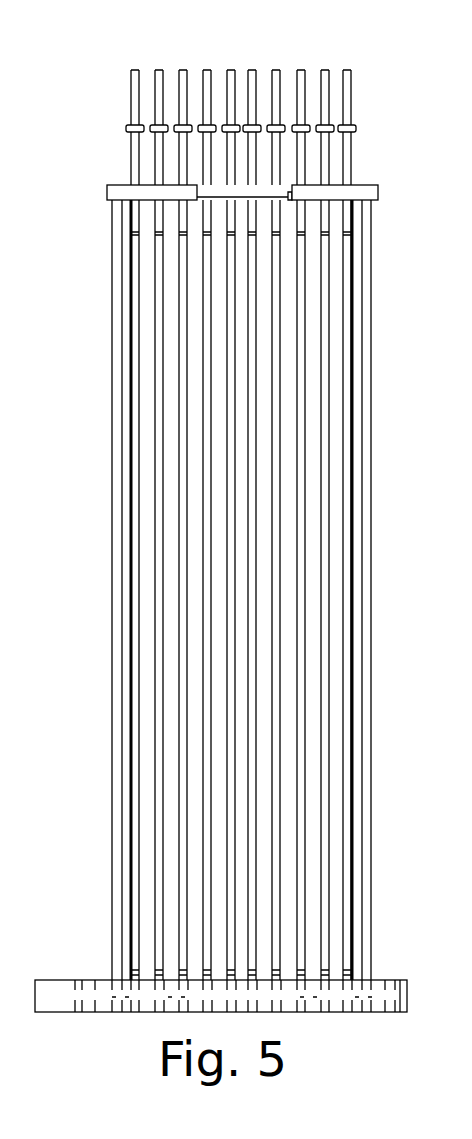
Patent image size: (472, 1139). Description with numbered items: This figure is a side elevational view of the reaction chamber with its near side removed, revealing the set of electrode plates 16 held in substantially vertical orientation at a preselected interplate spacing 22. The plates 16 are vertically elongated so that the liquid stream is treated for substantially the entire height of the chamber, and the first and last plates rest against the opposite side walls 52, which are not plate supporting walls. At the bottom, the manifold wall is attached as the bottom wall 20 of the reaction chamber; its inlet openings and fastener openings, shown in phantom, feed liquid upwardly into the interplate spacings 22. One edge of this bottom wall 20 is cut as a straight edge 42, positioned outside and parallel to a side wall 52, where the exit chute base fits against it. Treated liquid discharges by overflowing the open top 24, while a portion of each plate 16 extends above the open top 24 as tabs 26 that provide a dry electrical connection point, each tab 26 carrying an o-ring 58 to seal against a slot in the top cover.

The tabs 26 is at (230, 74).
The o-ring 58 is at (330, 122).
The open top 24 is at (220, 195).
The side walls 52 is at (112, 495).
The electrode plates 16 is at (180, 612).
The interplate spacings 22 is at (198, 738).
The bottom wall 20 is at (80, 980).
The straight edge 42 is at (407, 1000).